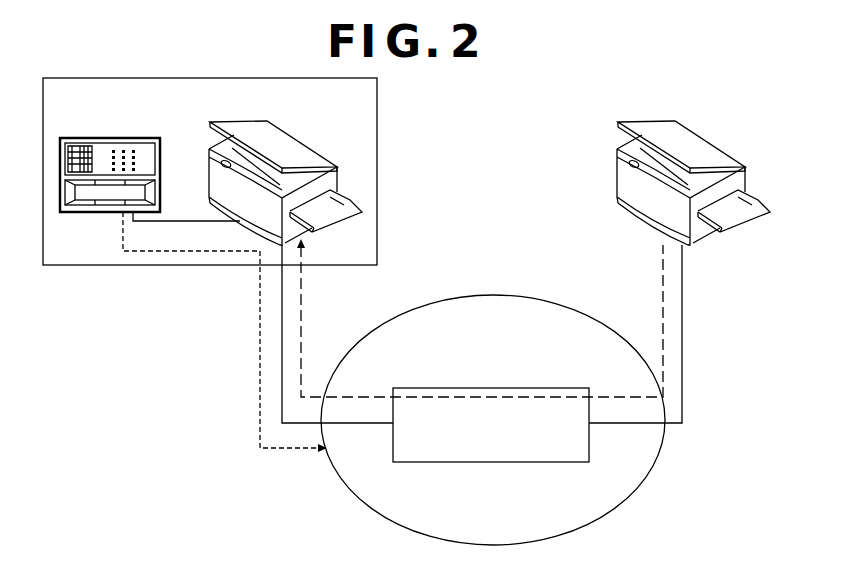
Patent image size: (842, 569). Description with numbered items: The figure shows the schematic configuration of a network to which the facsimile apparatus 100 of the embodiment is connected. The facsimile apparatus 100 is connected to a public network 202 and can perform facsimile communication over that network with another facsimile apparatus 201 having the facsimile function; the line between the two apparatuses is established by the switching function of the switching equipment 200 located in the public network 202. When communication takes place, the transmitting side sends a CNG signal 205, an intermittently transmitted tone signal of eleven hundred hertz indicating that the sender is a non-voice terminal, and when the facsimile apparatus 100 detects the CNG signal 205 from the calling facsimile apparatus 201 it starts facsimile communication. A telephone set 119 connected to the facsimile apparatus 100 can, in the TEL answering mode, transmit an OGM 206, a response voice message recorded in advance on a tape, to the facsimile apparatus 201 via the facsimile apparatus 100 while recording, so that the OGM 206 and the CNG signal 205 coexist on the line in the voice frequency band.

The telephone set 119 is at (128, 138).
The facsimile apparatus 100 is at (298, 140).
The facsimile apparatus 201 is at (710, 140).
The public network 202 is at (638, 487).
The switching equipment 200 is at (523, 388).
The CNG signal 205 is at (302, 313).
The OGM 206 is at (152, 251).